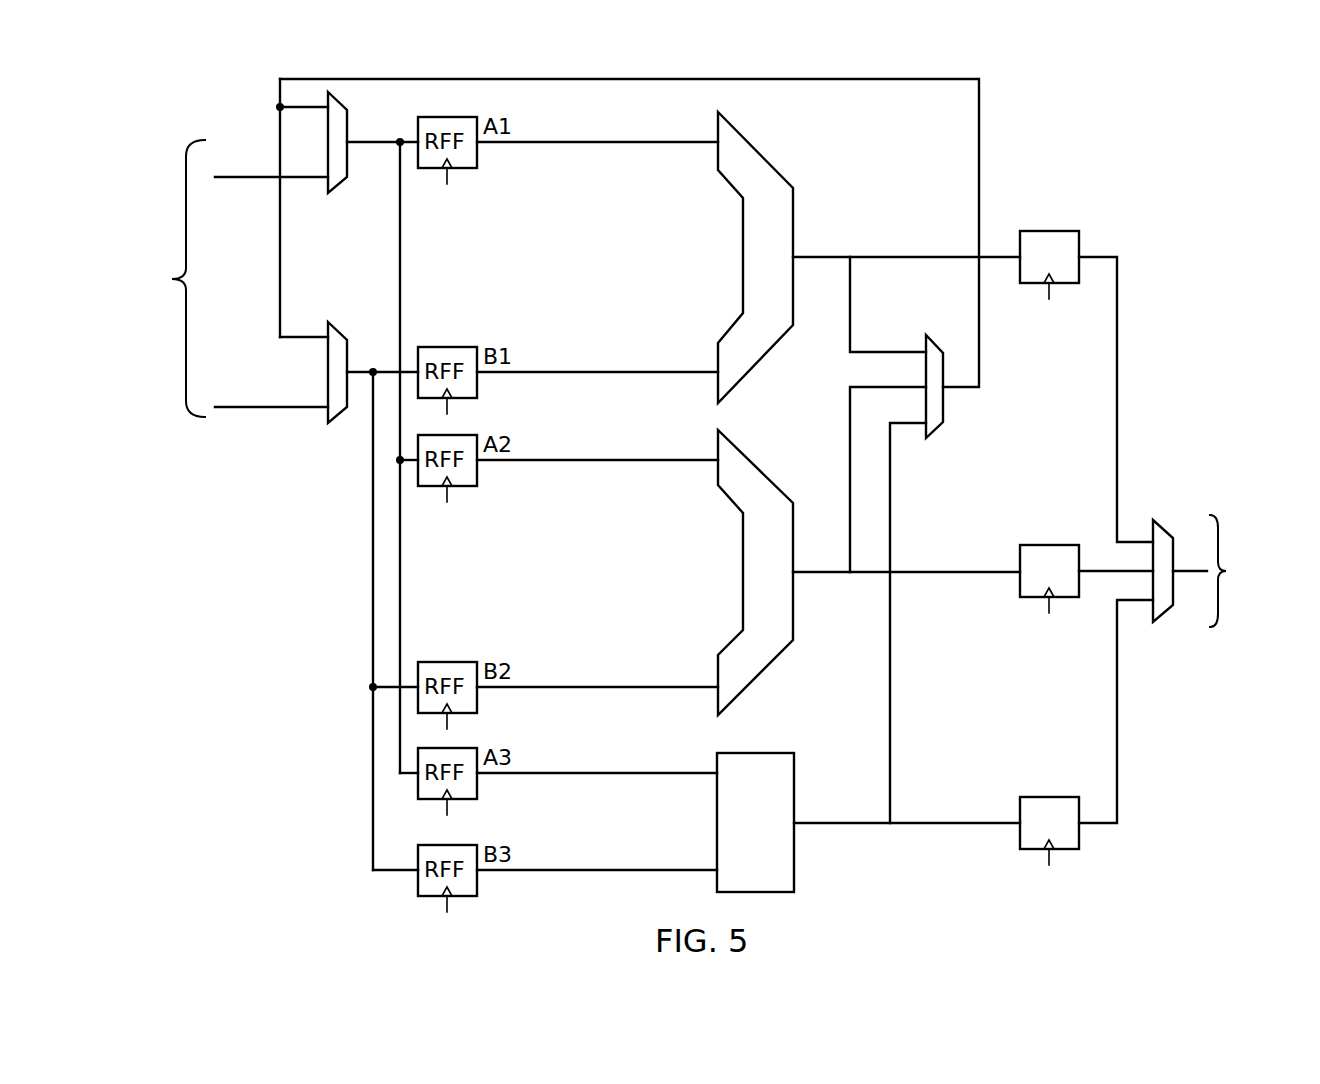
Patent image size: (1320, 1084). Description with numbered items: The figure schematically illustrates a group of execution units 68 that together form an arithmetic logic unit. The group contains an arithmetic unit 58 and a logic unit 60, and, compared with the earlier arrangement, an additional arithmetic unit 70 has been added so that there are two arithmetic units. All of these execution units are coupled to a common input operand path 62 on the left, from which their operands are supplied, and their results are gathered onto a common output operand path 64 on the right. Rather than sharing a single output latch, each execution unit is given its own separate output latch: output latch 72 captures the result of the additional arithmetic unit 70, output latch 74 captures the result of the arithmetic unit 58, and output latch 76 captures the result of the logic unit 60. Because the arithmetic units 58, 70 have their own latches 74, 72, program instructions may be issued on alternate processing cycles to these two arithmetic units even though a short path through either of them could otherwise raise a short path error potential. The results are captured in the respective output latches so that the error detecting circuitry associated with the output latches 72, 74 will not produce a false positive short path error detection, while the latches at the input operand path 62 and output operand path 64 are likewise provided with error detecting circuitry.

The arithmetic unit 58 is at (755, 465).
The logic unit 60 is at (794, 790).
The common input operand path 62 is at (226, 278).
The common output operand path 64 is at (1172, 540).
The group of execution units 68 is at (1026, 110).
The additional arithmetic unit 70 is at (793, 222).
The output latch 72 is at (1048, 231).
The output latch 74 is at (1048, 545).
The output latch 76 is at (1048, 797).